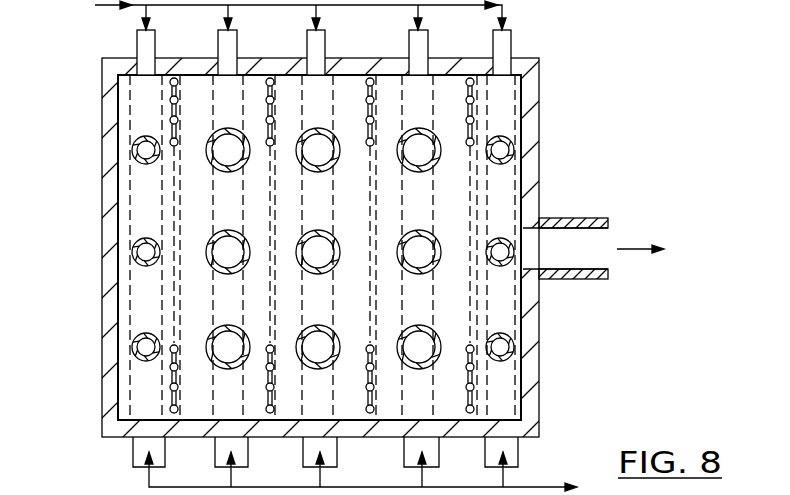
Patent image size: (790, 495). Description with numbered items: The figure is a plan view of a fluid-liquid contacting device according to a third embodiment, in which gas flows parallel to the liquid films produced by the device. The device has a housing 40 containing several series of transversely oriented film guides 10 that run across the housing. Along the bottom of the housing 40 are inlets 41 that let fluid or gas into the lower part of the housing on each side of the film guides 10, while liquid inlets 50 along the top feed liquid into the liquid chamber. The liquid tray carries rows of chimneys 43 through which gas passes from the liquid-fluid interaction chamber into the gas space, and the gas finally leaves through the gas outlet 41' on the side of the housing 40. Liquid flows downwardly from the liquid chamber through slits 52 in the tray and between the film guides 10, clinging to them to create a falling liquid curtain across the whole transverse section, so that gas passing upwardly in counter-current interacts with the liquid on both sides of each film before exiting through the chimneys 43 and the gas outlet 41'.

The film guides 10 is at (472, 365).
The housing 40 is at (108, 282).
The inlets 41 is at (331, 464).
The gas outlet 41' is at (593, 227).
The chimneys 43 is at (441, 148).
The liquid inlets 50 is at (511, 43).
The slits 52 is at (485, 198).